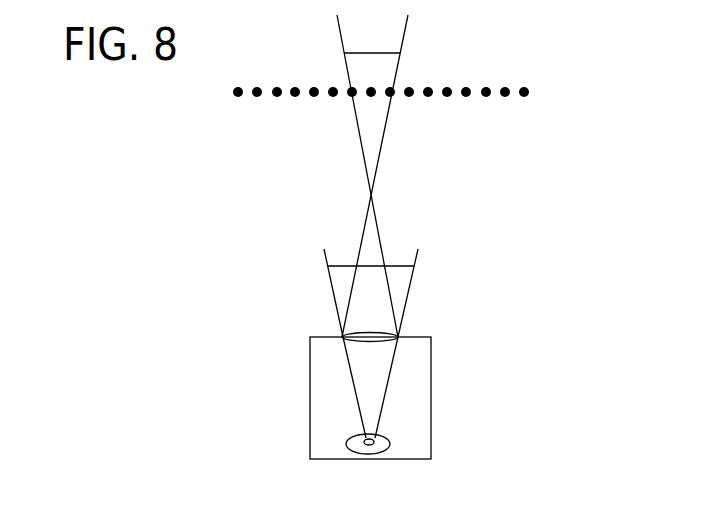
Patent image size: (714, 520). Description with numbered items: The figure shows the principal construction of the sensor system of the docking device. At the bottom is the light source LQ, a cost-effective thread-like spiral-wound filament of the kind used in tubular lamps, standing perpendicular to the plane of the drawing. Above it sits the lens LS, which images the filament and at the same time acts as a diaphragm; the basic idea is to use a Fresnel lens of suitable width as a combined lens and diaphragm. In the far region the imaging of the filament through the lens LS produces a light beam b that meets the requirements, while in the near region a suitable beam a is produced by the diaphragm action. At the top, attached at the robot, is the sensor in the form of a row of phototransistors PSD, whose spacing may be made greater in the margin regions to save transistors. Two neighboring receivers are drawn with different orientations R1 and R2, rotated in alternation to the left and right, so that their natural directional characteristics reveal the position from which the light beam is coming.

The near-region beam a is at (383, 56).
The far-region light beam b is at (383, 267).
The orientation of first sensor R1 is at (276, 97).
The orientation of second sensor R2 is at (296, 97).
The row of phototransistors PSD is at (486, 97).
The lens LS is at (400, 330).
The light source LQ is at (386, 398).